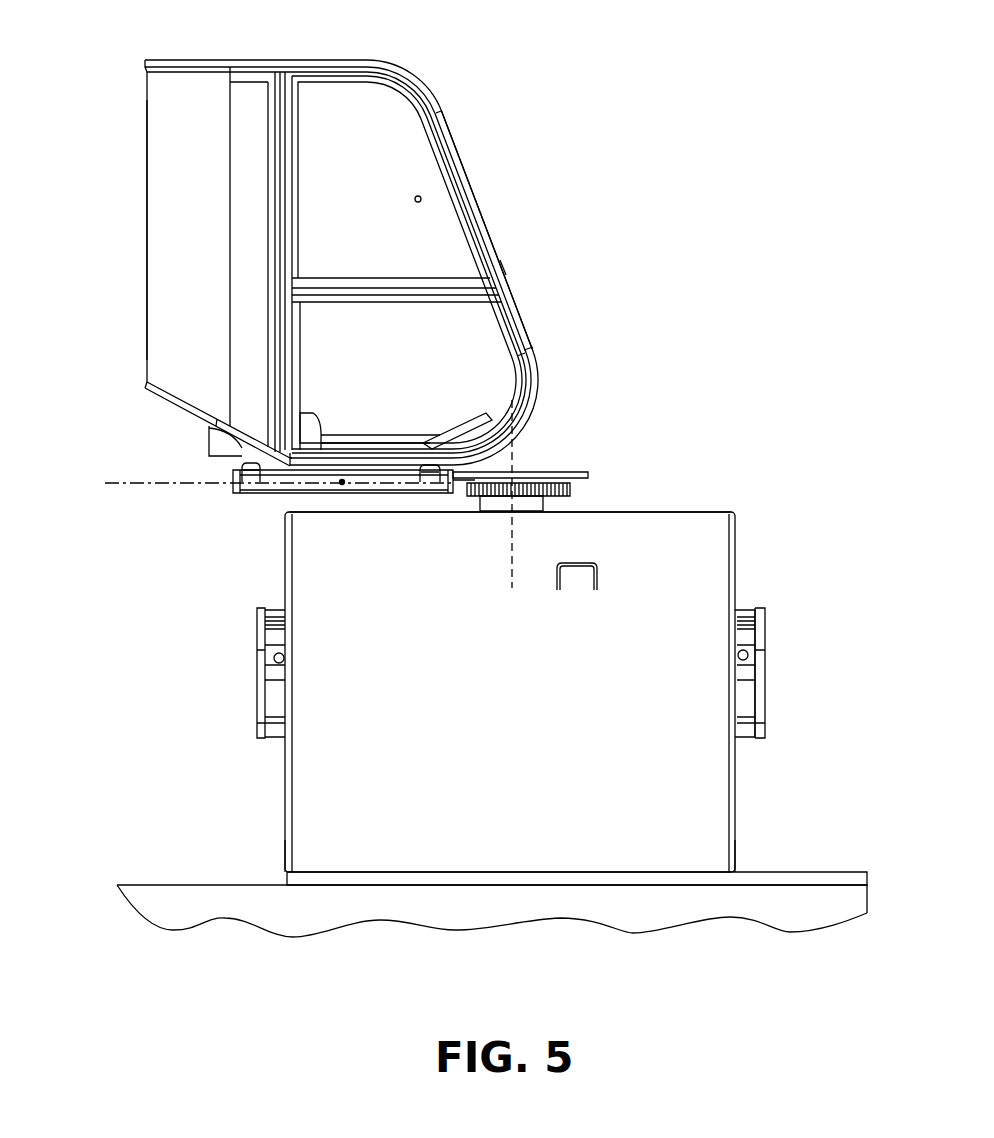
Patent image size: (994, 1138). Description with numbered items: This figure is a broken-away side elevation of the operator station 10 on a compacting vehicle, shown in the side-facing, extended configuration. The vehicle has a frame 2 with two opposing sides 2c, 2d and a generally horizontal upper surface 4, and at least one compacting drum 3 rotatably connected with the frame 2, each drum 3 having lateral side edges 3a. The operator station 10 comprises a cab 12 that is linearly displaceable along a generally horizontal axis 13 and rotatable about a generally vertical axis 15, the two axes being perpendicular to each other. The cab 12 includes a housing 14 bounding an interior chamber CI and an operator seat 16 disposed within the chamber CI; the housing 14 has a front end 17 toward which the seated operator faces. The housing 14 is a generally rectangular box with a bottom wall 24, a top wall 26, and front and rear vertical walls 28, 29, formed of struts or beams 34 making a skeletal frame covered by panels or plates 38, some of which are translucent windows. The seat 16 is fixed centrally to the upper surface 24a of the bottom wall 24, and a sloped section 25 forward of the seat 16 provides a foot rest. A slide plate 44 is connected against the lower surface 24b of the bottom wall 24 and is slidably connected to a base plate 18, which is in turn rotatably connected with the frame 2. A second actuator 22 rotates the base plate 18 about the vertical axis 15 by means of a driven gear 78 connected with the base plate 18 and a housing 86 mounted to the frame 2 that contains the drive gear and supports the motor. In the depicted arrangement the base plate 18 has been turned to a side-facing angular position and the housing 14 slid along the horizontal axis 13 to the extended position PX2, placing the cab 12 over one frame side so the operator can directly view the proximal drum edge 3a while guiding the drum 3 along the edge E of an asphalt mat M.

The operator station 10 is at (645, 349).
The frame 2 is at (772, 610).
The frame side 2c is at (767, 658).
The frame side 2d is at (257, 670).
The compacting drum 3 is at (765, 782).
The lateral side edge 3a is at (285, 858).
The upper surface 4 is at (632, 512).
The cab 12 is at (456, 137).
The horizontal axis 13 is at (123, 483).
The housing 14 is at (131, 218).
The vertical axis 15 is at (512, 550).
The operator seat 16 is at (308, 406).
The front end 17 is at (489, 226).
The base plate 18 is at (567, 464).
The second actuator 22 is at (582, 504).
The bottom wall 24 is at (188, 410).
The upper surface 24a is at (378, 440).
The lower surface 24b is at (240, 455).
The sloped section 25 is at (465, 420).
The top wall 26 is at (262, 58).
The front vertical wall 28 is at (506, 268).
The rear vertical wall 29 is at (163, 262).
The struts or beams 34 is at (386, 66).
The panels or plates 38 is at (362, 171).
The slide plate 44 is at (393, 495).
The driven gear 78 is at (467, 498).
The housing 86 is at (492, 506).
The interior chamber CI is at (421, 198).
The extended position PX2 is at (342, 485).
The edge E is at (262, 880).
The asphalt mat M is at (470, 875).